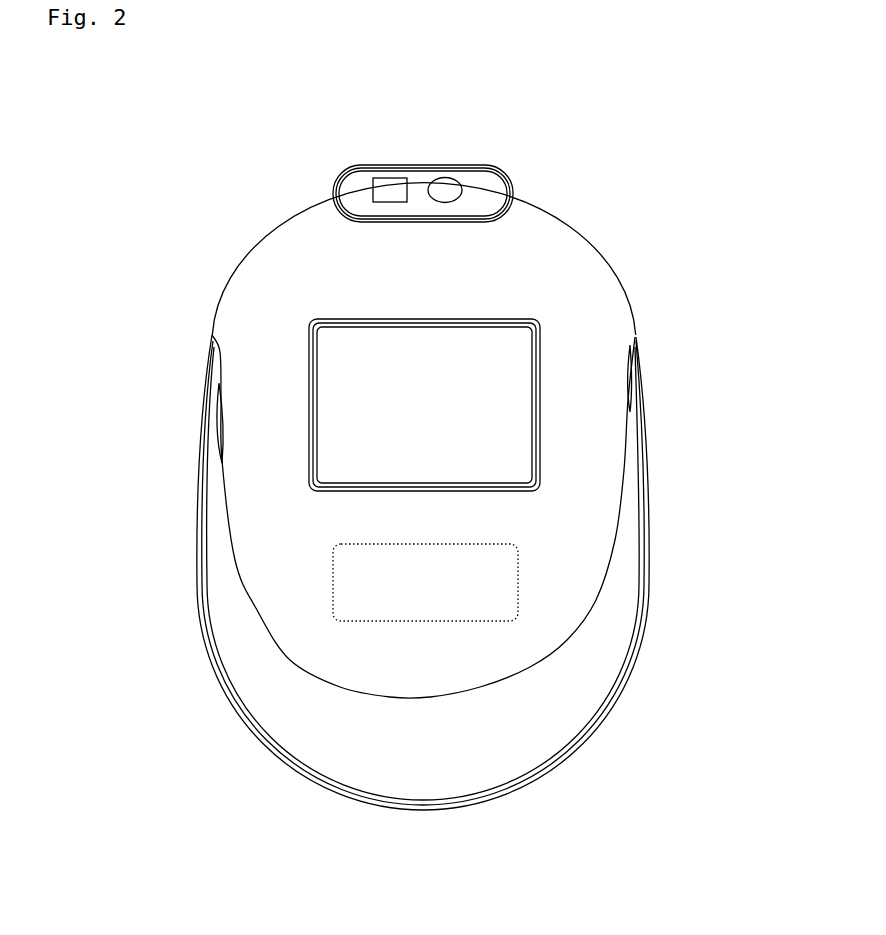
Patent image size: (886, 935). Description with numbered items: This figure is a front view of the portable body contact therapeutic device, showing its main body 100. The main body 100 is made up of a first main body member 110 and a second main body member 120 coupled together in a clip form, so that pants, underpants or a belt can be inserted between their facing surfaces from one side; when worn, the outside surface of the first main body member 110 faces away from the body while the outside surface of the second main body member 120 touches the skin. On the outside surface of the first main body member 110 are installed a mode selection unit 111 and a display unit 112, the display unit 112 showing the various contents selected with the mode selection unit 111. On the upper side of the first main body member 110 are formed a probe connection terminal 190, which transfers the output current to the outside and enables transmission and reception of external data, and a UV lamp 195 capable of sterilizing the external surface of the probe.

The main body 100 is at (431, 438).
The first main body member 110 is at (583, 277).
The mode selection unit 111 is at (353, 575).
The display unit 112 is at (497, 443).
The second main body member 120 is at (633, 588).
The probe connection terminal 190 is at (457, 195).
The UV lamp 195 is at (387, 196).